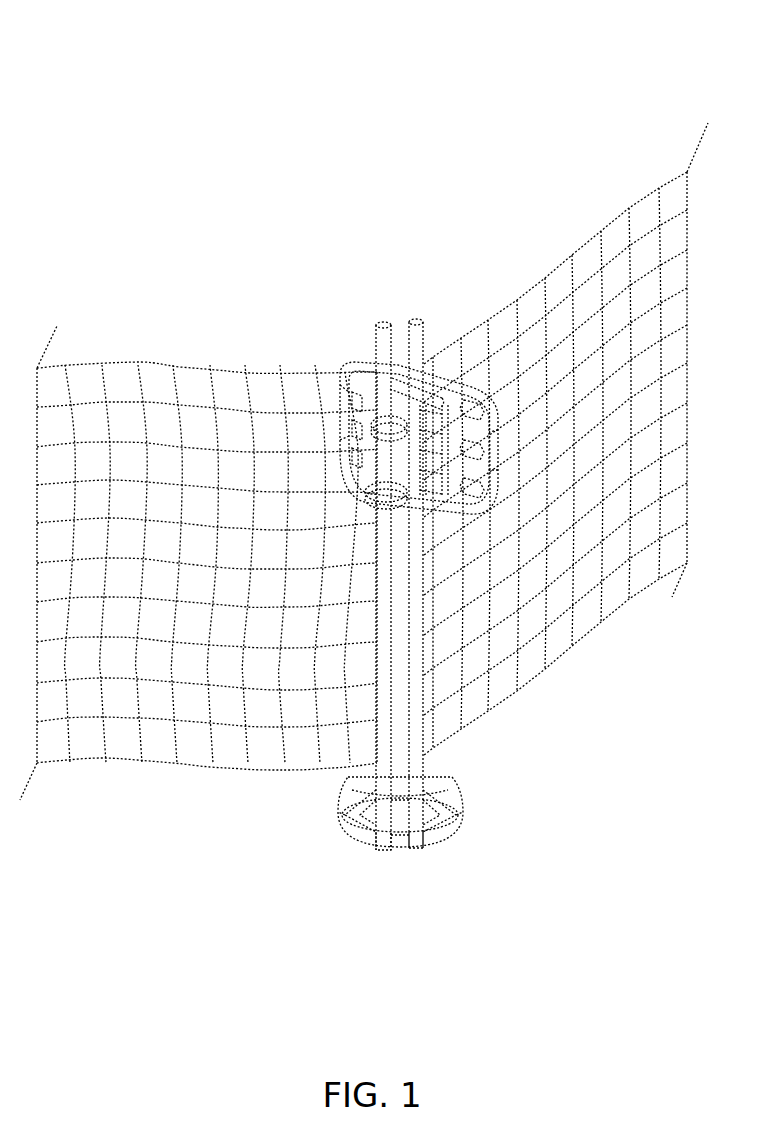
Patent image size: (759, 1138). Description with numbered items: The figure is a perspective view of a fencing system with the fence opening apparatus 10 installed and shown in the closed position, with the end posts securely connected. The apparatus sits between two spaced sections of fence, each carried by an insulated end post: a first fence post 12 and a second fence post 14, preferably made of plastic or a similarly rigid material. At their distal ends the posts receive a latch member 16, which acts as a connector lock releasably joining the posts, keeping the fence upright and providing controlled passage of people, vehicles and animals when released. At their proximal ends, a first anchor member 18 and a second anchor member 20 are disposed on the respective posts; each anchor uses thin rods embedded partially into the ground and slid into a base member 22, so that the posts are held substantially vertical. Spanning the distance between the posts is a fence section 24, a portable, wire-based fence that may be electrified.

The fence opening apparatus 10 is at (345, 108).
The first fence post 12 is at (370, 350).
The second fence post 14 is at (438, 380).
The latch member 16 is at (410, 343).
The first anchor member 18 is at (380, 848).
The second anchor member 20 is at (417, 848).
The base member 22 is at (348, 783).
The fence section 24 is at (492, 630).